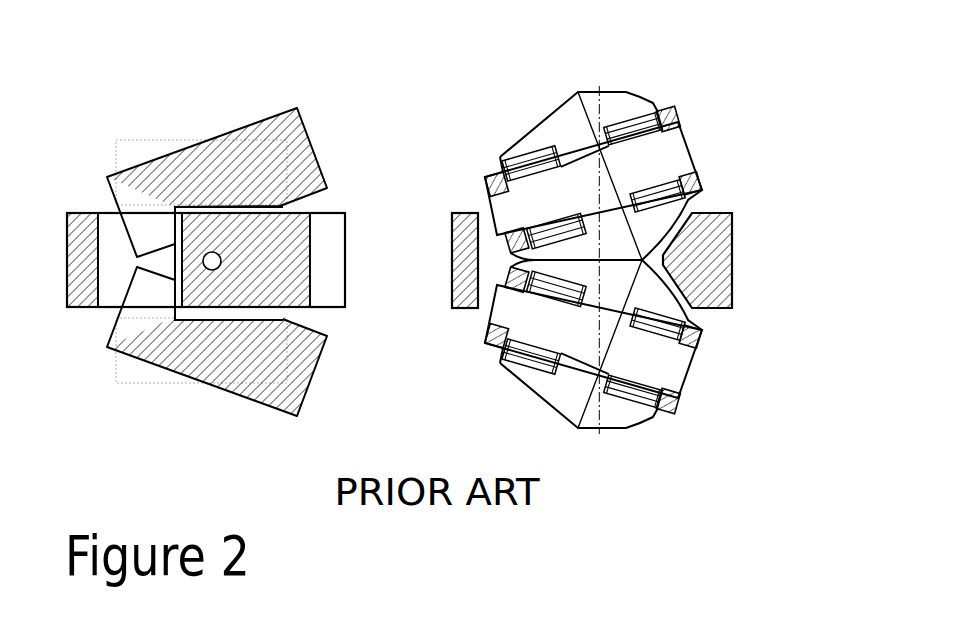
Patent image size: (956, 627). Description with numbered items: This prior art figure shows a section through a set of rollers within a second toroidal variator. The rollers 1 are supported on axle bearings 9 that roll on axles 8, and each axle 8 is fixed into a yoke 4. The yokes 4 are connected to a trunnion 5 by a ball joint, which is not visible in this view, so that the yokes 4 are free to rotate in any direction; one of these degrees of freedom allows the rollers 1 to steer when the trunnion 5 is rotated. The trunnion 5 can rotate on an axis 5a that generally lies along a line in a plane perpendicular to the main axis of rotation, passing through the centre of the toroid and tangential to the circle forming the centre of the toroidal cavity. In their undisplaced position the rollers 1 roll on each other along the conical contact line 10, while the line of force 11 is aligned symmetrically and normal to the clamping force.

The rollers 1 is at (562, 127).
The yokes 4 is at (272, 127).
The trunnion 5 is at (328, 225).
The axis 5a is at (217, 266).
The axles 8 is at (650, 160).
The axle bearings 9 is at (668, 331).
The conical contact line 10 is at (578, 263).
The line of force 11 is at (600, 330).